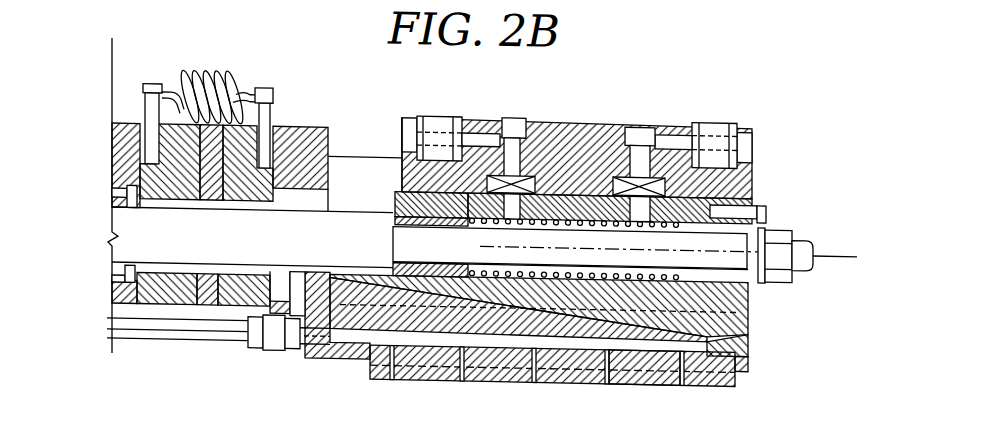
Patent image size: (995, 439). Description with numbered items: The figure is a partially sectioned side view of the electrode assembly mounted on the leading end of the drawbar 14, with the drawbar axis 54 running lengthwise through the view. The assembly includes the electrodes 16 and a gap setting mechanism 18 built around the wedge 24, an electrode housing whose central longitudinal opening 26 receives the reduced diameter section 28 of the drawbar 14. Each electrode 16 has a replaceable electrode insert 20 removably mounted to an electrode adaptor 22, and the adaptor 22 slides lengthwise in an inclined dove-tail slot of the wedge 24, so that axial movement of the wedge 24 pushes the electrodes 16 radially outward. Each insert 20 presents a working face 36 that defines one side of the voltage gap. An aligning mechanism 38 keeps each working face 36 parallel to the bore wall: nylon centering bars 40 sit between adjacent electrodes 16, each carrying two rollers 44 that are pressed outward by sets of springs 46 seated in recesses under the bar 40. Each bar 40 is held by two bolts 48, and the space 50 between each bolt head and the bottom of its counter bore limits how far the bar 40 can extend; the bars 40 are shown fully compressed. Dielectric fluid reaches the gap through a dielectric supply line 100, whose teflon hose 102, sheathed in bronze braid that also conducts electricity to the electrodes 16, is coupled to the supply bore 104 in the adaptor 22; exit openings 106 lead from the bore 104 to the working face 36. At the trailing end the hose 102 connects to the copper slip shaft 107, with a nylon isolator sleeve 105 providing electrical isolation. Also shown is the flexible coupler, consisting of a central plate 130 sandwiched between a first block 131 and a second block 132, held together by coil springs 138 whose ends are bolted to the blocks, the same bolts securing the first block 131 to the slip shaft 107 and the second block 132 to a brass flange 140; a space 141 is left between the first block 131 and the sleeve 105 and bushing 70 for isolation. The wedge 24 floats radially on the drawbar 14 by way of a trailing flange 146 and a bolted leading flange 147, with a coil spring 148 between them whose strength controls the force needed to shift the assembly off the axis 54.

The drawbar 14 is at (333, 249).
The electrode 16 is at (762, 355).
The gap setting mechanism 18 is at (762, 322).
The electrode insert 20 is at (637, 367).
The electrode adaptor 22 is at (342, 160).
The wedge 24 is at (748, 279).
The central longitudinal opening 26 is at (733, 301).
The reduced diameter section 28 is at (463, 248).
The working face 36 is at (703, 376).
The aligning mechanism 38 is at (405, 100).
The centering bar 40 is at (580, 113).
The roller 44 is at (438, 116).
The springs 46 is at (527, 172).
The bolt 48 is at (515, 112).
The space 50 is at (509, 114).
The axis 54 is at (833, 242).
The bushing 70 is at (114, 262).
The dielectric supply line 100 is at (180, 350).
The teflon hose 102 is at (165, 330).
The supply bore 104 is at (300, 333).
The isolator sleeve 105 is at (115, 192).
The exit openings 106 is at (388, 376).
The slip shaft 107 is at (130, 132).
The central plate 130 is at (218, 133).
The first block 131 is at (168, 88).
The second block 132 is at (245, 168).
The coil spring 138 is at (218, 72).
The brass flange 140 is at (297, 128).
The space 141 is at (135, 207).
The trailing flange 146 is at (393, 201).
The leading flange 147 is at (766, 195).
The coil spring 148 is at (677, 268).